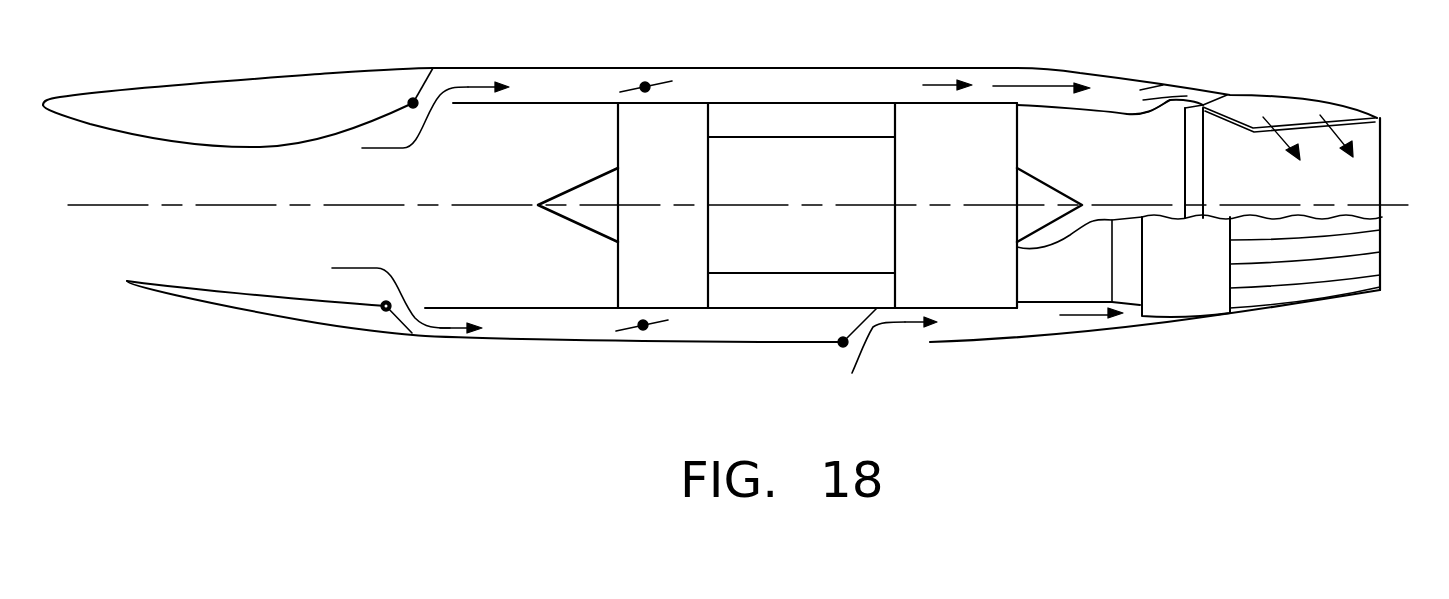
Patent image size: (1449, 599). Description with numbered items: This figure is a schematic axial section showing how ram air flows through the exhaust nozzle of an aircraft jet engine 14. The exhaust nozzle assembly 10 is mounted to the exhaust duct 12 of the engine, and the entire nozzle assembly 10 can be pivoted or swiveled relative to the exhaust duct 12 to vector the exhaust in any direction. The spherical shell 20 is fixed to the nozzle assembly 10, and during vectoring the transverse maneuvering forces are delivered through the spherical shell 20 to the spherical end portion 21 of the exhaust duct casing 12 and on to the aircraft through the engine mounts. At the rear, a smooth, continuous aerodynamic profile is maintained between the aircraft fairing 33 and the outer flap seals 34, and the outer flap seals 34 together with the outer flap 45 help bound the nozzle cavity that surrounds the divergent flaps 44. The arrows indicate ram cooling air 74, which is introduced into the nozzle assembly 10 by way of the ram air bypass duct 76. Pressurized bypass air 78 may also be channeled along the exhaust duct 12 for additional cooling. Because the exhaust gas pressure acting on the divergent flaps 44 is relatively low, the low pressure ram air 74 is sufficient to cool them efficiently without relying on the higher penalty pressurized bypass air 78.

The exhaust nozzle assembly 10 is at (1303, 87).
The exhaust duct 12 is at (1110, 108).
The aircraft jet engine 14 is at (648, 273).
The spherical shell 20 is at (1198, 105).
The spherical end portion 21 is at (1122, 272).
The aircraft fairing 33 is at (1133, 75).
The outer flap seals 34 is at (1178, 308).
The divergent flaps 44 is at (1360, 120).
The outer flap 45 is at (1282, 313).
The ram cooling air 74 is at (468, 85).
The ram air bypass duct 76 is at (765, 82).
The pressurized bypass air 78 is at (818, 118).